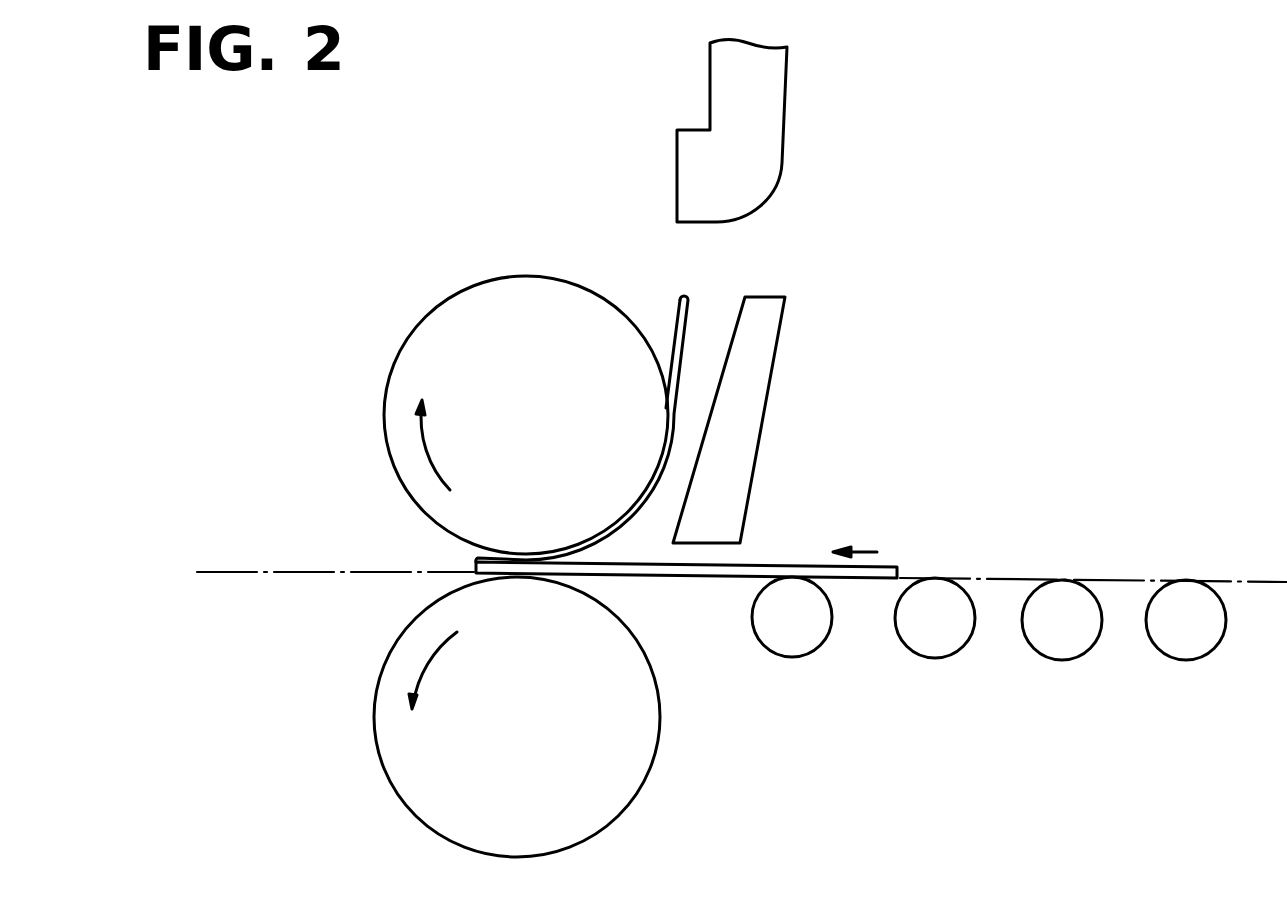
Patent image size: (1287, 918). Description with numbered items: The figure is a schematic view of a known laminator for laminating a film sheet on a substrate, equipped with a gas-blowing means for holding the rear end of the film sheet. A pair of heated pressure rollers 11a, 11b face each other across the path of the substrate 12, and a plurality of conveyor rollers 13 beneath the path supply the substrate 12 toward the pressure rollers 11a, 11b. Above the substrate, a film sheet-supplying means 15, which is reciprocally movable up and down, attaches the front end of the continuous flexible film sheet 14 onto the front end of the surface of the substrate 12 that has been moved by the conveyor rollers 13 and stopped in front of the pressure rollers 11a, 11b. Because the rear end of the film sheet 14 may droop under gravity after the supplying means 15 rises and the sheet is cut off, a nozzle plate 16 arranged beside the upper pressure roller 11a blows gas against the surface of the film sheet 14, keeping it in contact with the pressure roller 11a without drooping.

The heated pressure roller 11a is at (387, 383).
The heated pressure roller 11b is at (385, 768).
The substrate 12 is at (763, 564).
The conveyor rollers 13 is at (795, 657).
The film sheet 14 is at (677, 317).
The film sheet-supplying means 15 is at (710, 70).
The nozzle plate 16 is at (777, 357).